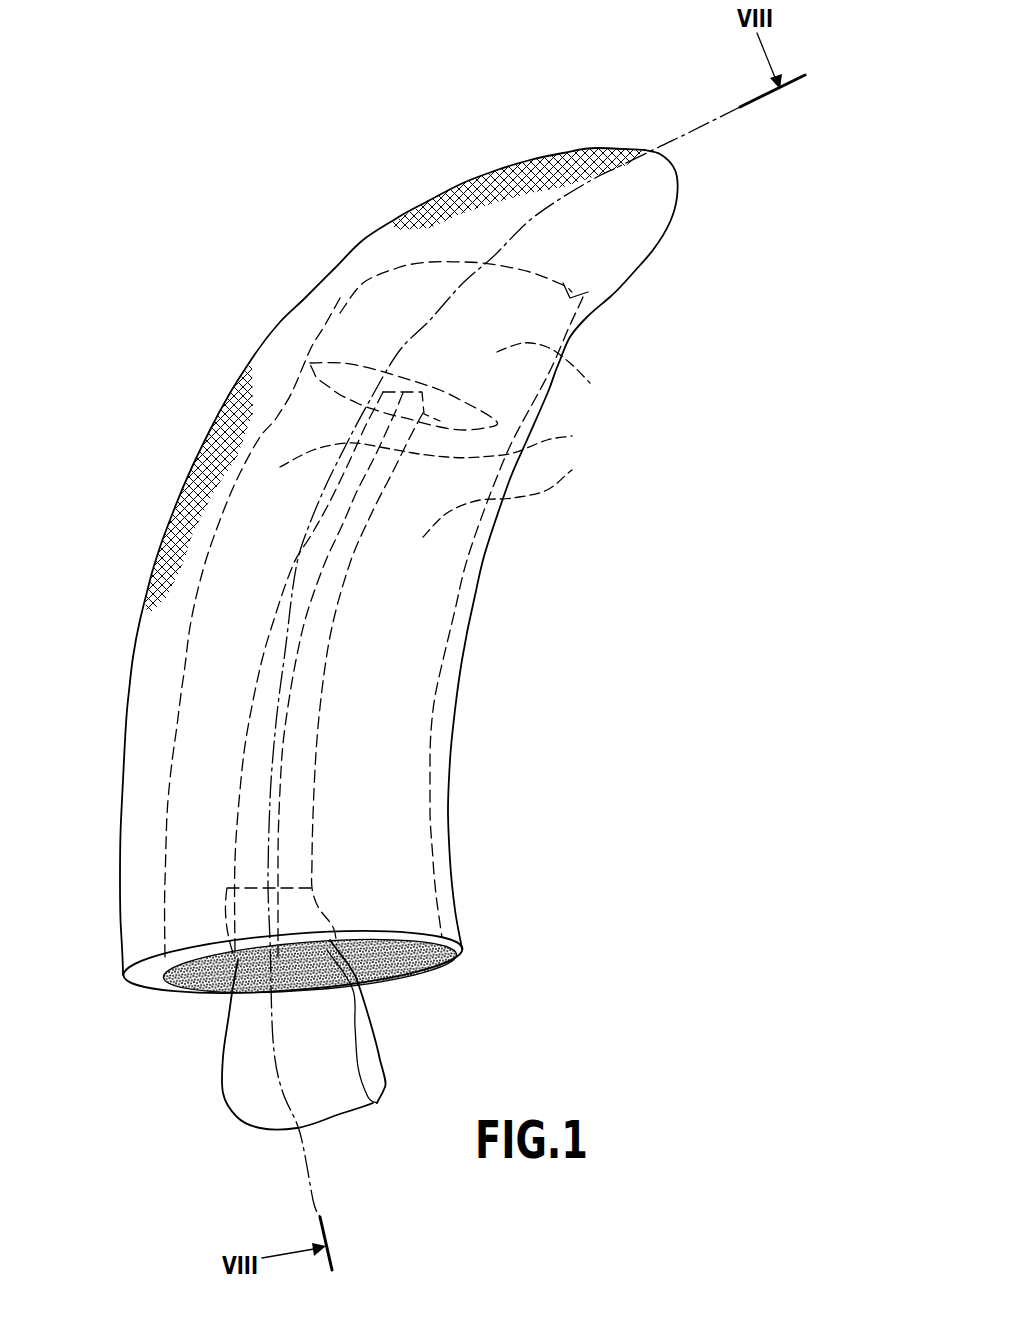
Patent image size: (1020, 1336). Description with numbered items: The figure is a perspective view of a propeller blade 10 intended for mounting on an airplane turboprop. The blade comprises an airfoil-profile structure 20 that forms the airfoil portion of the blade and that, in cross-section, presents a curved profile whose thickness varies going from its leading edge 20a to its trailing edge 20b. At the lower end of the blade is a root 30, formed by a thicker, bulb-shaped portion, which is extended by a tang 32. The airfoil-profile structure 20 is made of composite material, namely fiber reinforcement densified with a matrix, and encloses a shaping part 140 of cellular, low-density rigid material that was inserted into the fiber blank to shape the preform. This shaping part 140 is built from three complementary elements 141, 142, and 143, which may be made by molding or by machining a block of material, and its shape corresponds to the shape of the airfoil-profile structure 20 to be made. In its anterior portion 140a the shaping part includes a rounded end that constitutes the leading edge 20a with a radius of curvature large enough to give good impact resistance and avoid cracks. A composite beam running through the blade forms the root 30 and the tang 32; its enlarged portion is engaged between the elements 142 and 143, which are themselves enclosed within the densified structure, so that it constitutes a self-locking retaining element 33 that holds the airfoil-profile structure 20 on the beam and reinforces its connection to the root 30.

The propeller blade 10 is at (222, 313).
The airfoil-profile structure 20 is at (335, 270).
The leading edge 20a is at (138, 645).
The trailing edge 20b is at (458, 668).
The root 30 is at (378, 1071).
The tang 32 is at (387, 975).
The retaining element 33 is at (325, 905).
The shaping part 140 is at (610, 375).
The anterior portion 140a is at (190, 990).
The first element 141 is at (554, 380).
The second element 142 is at (446, 442).
The third element 143 is at (517, 495).